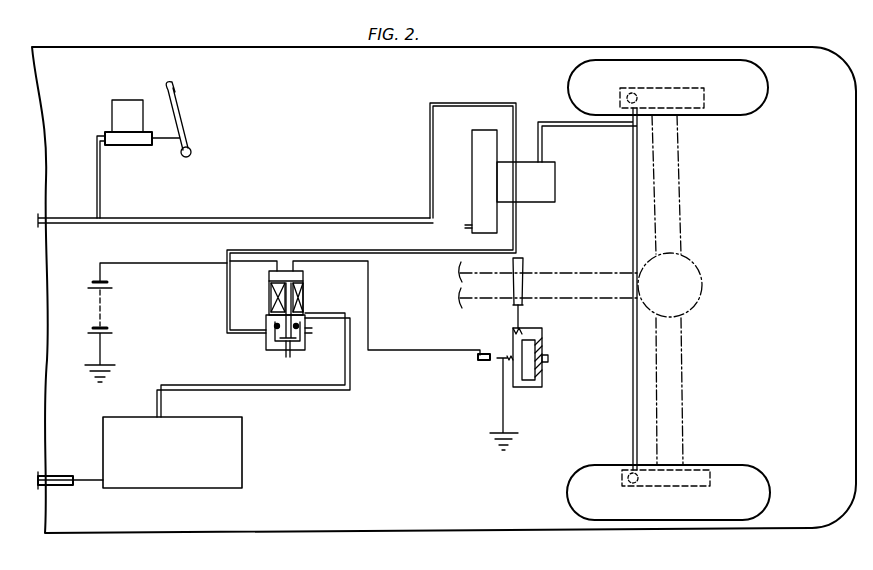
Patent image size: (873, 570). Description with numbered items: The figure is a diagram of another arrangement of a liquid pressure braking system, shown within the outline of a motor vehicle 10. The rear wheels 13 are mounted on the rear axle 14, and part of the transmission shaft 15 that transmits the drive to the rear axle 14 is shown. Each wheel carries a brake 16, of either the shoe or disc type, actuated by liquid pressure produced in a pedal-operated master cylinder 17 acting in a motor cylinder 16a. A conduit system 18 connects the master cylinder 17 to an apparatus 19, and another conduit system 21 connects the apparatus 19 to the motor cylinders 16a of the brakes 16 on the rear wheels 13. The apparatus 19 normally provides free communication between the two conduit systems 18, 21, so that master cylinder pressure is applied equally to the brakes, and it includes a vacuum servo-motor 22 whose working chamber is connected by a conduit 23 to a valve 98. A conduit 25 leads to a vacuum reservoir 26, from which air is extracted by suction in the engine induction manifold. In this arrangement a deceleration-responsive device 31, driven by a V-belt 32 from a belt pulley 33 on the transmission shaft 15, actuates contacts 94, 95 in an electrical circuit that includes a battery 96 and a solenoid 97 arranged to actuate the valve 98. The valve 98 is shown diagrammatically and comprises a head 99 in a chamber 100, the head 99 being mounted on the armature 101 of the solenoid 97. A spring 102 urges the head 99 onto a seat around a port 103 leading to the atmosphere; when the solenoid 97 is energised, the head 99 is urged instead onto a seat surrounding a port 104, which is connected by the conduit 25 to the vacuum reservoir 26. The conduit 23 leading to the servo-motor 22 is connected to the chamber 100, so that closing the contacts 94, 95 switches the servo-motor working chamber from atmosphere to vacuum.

The motor vehicle 10 is at (444, 290).
The rear wheels 13 is at (742, 70).
The rear axle 14 is at (666, 168).
The transmission shaft 15 is at (612, 276).
The brake 16 is at (677, 88).
The motor cylinder 16a is at (622, 95).
The pedal-operated master cylinder 17 is at (134, 146).
The conduit system 18 is at (250, 218).
The apparatus 19 is at (573, 180).
The conduit system 21 is at (632, 212).
The vacuum servo-motor 22 is at (472, 150).
The conduit 23 is at (327, 250).
The conduit 25 is at (320, 390).
The vacuum reservoir 26 is at (225, 462).
The deceleration-responsive device 31 is at (536, 388).
The V-belt 32 is at (522, 318).
The belt pulley 33 is at (525, 266).
The contact 94 is at (499, 345).
The contact 95 is at (490, 364).
The battery 96 is at (112, 318).
The solenoid 97 is at (300, 286).
The valve 98 is at (263, 360).
The head 99 is at (300, 340).
The chamber 100 is at (268, 338).
The armature 101 is at (296, 300).
The spring 102 is at (300, 326).
The port 103 is at (287, 358).
The port 104 is at (280, 326).